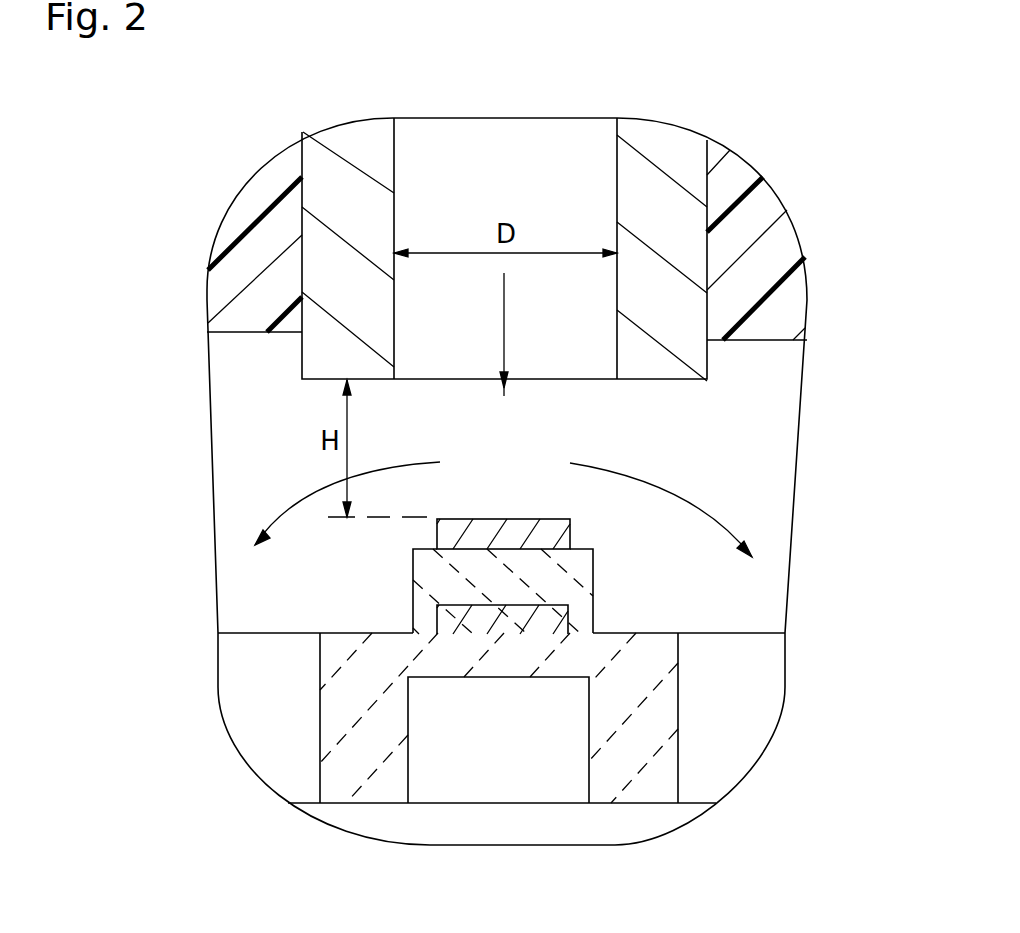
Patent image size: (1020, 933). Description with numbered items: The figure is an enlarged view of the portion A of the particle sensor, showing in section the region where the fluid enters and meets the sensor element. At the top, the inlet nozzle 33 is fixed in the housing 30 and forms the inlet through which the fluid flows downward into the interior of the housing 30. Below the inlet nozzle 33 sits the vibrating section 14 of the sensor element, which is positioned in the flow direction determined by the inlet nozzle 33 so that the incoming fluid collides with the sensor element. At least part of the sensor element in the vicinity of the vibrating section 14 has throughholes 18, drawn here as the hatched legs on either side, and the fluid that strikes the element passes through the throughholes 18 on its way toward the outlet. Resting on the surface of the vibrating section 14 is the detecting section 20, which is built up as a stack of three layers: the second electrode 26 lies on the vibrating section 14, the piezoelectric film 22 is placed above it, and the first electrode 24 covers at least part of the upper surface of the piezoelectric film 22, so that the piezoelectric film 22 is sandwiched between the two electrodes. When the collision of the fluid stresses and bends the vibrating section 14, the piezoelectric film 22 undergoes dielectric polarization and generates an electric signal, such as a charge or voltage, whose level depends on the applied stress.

The vibrating section 14 is at (512, 663).
The throughholes 18 is at (318, 780).
The detecting section 20 is at (663, 578).
The piezoelectric film 22 is at (575, 585).
The first electrode 24 is at (550, 535).
The second electrode 26 is at (553, 625).
The housing 30 is at (760, 200).
The inlet nozzle 33 is at (662, 142).
The portion A is at (243, 188).